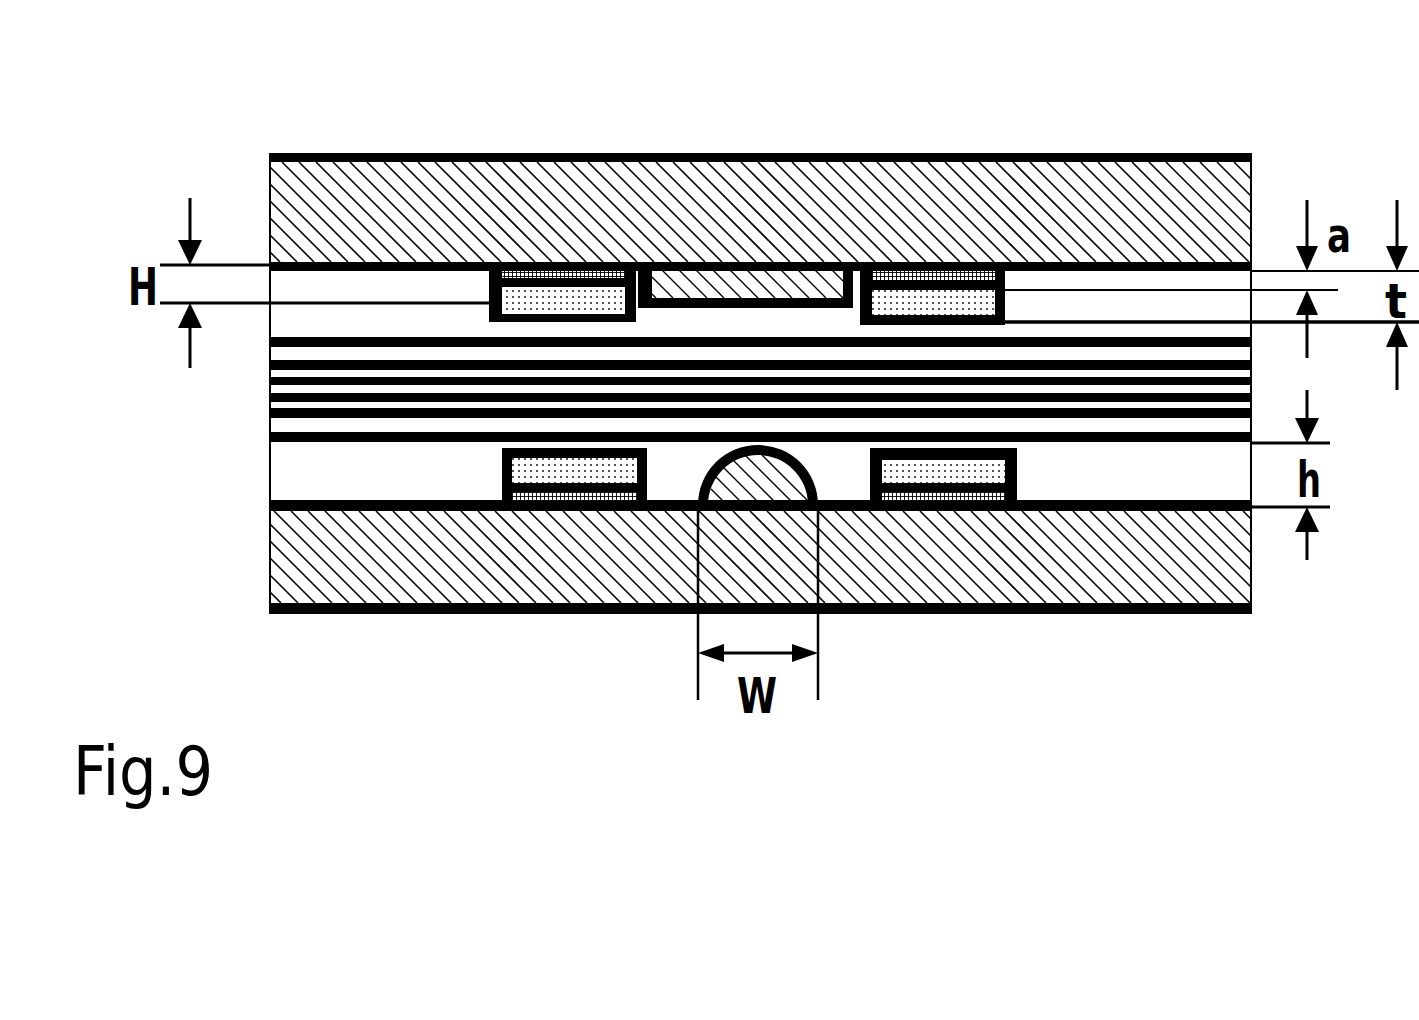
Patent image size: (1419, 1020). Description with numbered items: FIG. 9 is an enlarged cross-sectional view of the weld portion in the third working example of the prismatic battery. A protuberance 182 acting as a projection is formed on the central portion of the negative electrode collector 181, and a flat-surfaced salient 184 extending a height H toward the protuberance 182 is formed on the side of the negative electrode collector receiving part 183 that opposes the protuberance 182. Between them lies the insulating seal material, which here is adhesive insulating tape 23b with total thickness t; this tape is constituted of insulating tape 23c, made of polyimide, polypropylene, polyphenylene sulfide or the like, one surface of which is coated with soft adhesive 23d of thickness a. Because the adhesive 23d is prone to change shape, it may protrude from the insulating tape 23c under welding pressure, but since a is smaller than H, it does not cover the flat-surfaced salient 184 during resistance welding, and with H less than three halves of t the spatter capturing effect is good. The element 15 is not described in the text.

The multilayer reflector 15 is at (397, 387).
The negative electrode collector 181 is at (340, 572).
The protuberance 182 is at (750, 477).
The negative electrode collector receiving part 183 is at (1143, 193).
The flat-surfaced salient 184 is at (765, 280).
The adhesive insulating tape 23b is at (670, 86).
The insulating tape 23c is at (527, 270).
The adhesive 23d is at (596, 268).